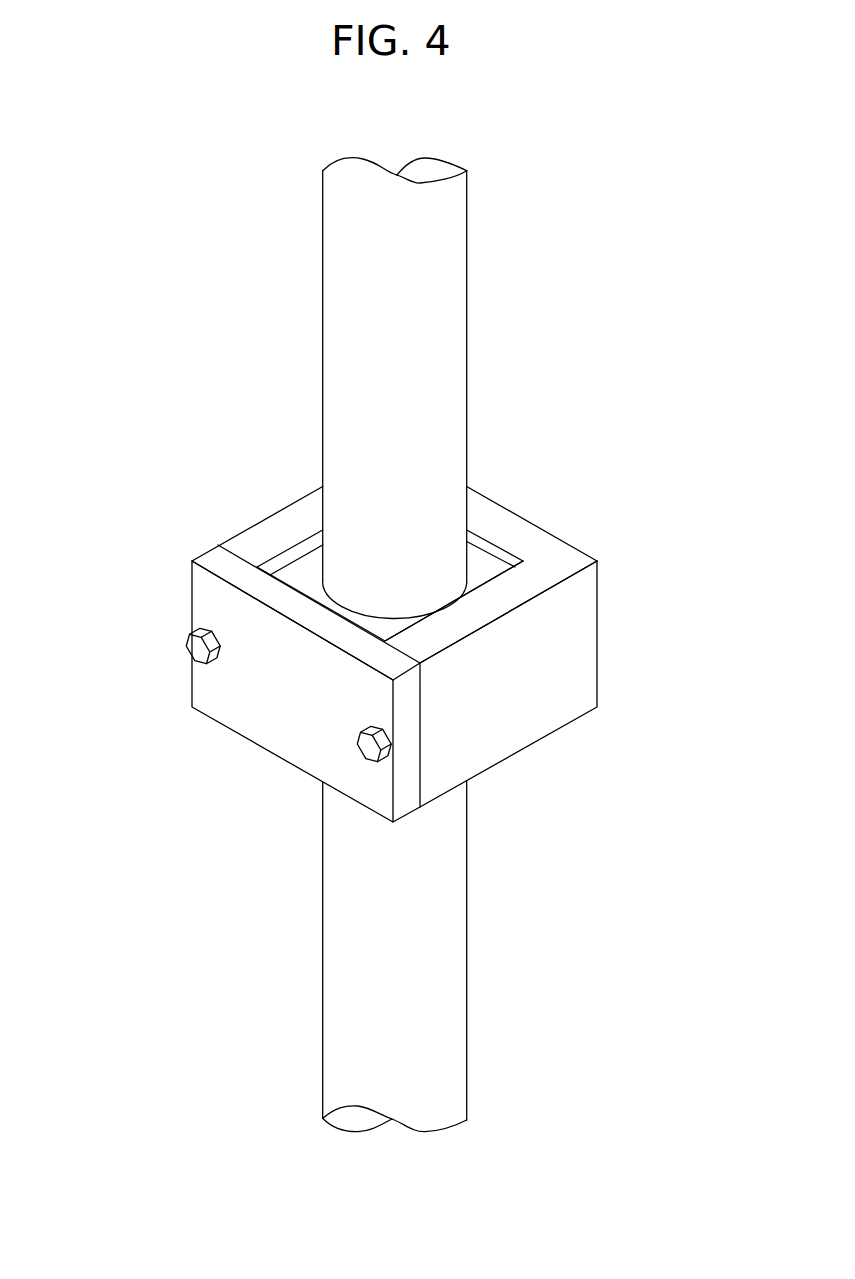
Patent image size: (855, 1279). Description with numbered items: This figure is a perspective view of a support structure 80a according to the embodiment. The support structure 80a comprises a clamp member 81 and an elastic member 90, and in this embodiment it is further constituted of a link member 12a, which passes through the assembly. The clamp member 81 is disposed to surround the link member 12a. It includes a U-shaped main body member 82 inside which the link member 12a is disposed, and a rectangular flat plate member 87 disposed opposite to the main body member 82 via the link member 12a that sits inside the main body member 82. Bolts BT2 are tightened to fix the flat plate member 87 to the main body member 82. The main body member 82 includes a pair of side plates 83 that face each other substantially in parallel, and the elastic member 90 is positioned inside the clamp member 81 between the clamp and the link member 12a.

The link member 12a is at (440, 284).
The support structure 80a is at (177, 465).
The clamp member 81 is at (511, 492).
The main body member 82 is at (567, 543).
The side plates 83 is at (523, 725).
The flat plate member 87 is at (265, 724).
The elastic member 90 is at (290, 565).
The bolts BT2 is at (196, 649).